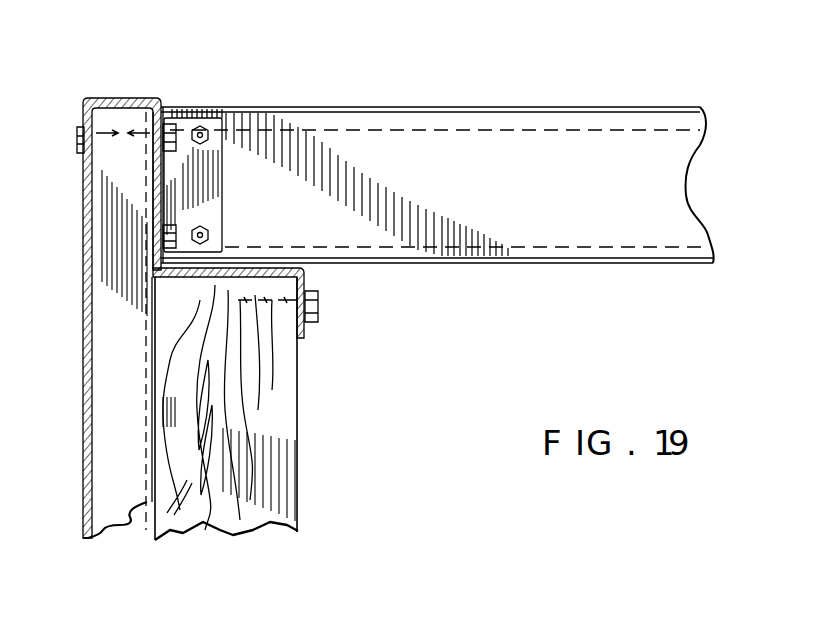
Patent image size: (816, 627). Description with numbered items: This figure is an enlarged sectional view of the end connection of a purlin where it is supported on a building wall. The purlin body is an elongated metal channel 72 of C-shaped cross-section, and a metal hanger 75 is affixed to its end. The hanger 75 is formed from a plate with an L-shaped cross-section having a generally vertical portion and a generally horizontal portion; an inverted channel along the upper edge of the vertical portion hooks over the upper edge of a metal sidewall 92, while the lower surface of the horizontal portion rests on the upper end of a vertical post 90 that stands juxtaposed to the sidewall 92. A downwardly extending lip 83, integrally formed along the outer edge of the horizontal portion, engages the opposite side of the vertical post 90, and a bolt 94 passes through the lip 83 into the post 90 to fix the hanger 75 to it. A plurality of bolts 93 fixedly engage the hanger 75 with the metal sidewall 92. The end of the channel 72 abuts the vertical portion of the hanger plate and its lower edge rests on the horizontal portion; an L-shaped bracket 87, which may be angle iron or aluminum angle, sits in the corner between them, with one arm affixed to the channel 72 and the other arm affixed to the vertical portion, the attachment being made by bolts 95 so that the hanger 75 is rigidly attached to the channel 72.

The elongated metal channel 72 is at (347, 114).
The metal hanger 75 is at (195, 288).
The lip 83 is at (304, 336).
The bracket 87 is at (207, 158).
The vertical post 90 is at (286, 412).
The metal sidewall 92 is at (120, 244).
The bolts 93 is at (78, 135).
The bolt 94 is at (318, 305).
The bolts 95 is at (205, 237).